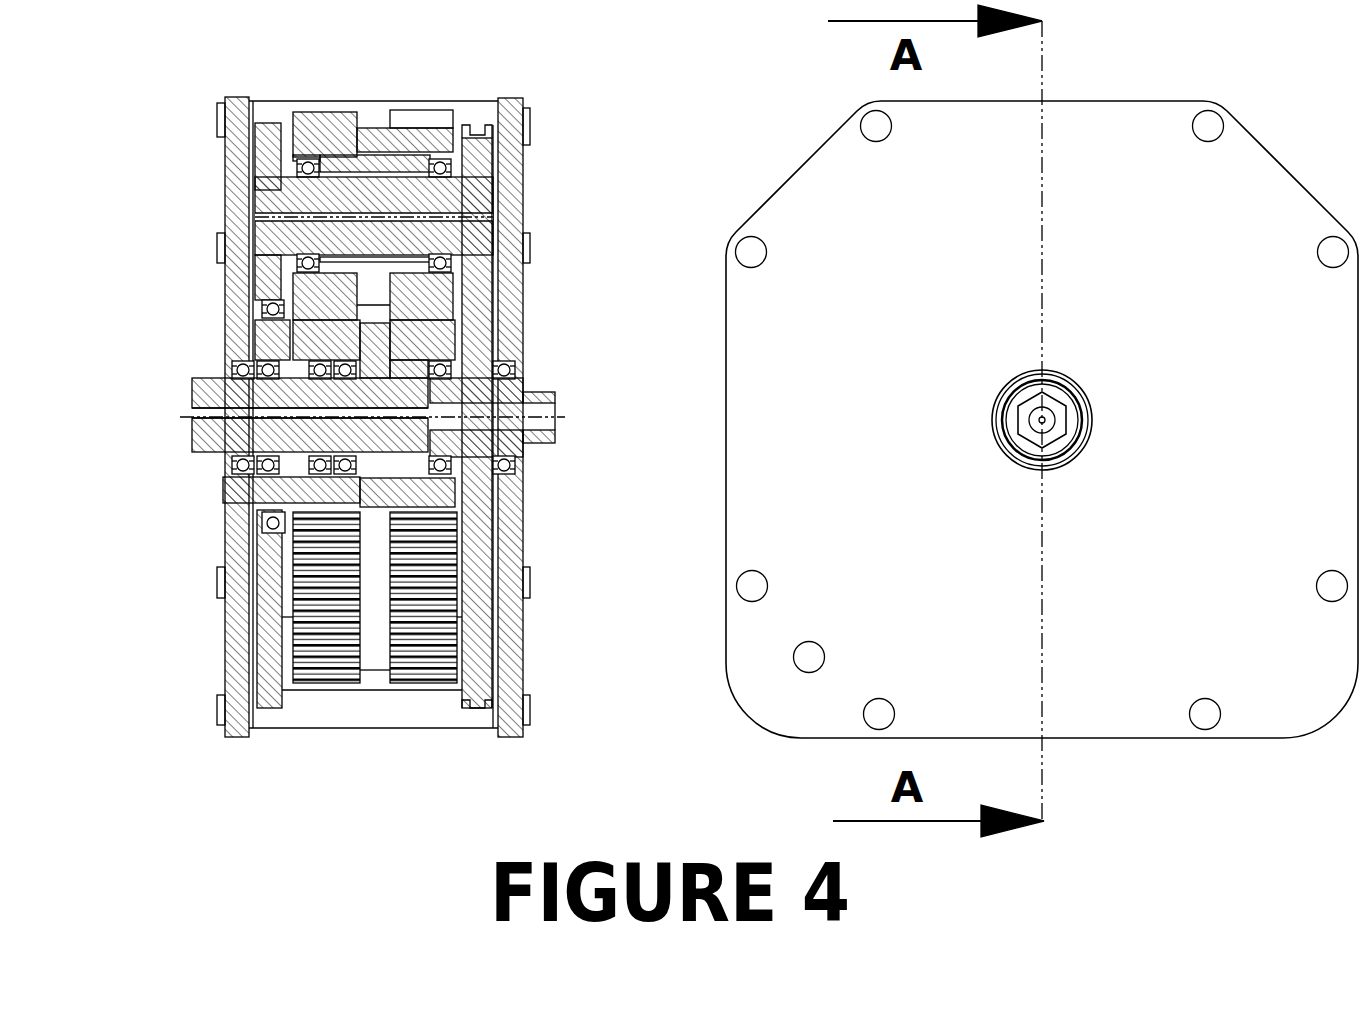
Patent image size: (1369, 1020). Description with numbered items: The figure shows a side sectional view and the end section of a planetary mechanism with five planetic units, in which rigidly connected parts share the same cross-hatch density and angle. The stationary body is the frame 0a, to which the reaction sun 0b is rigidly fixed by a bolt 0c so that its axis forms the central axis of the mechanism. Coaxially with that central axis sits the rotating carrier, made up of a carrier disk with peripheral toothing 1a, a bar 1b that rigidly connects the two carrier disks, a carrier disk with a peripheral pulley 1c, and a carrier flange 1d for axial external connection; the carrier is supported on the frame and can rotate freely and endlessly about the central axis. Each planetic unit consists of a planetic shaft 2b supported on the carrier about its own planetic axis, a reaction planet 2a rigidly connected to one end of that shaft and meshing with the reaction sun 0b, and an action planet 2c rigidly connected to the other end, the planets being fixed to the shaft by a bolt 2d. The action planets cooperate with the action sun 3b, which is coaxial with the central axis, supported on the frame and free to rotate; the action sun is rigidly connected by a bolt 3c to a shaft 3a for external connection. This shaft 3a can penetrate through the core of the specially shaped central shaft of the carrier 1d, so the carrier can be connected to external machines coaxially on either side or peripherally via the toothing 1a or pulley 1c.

The frame 0a is at (237, 687).
The reaction sun 0b is at (309, 338).
The bolt 0c is at (282, 488).
The carrier disk with toothing 1a is at (265, 613).
The bar 1b is at (388, 200).
The carrier disk with pulley 1c is at (482, 618).
The carrier flange 1d is at (549, 445).
The reaction planet 2a is at (313, 123).
The planetic shaft 2b is at (357, 143).
The action planet 2c is at (427, 129).
The bolt 2d is at (383, 163).
The shaft 3a is at (369, 393).
The action sun 3b is at (436, 347).
The bolt 3c is at (420, 493).